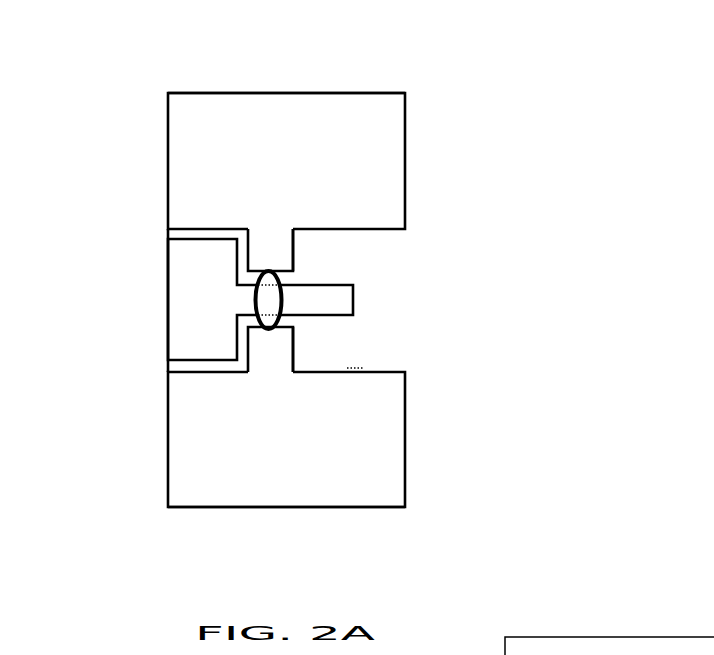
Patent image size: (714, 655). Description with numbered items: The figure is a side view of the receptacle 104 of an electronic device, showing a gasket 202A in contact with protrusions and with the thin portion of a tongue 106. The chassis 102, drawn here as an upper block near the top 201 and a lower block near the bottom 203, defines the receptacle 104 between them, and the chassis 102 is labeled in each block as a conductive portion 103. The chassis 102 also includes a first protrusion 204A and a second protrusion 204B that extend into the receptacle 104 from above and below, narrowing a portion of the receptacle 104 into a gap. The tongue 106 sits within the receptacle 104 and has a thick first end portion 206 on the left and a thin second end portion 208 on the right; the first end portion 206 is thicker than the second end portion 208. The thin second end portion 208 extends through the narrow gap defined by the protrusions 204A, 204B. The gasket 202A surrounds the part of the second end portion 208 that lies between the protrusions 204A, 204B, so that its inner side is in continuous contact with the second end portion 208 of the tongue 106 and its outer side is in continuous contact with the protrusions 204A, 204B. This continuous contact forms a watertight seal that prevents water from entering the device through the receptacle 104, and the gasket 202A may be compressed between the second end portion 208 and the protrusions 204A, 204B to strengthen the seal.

The chassis 102 is at (365, 495).
The conductive portion 103 is at (228, 217).
The receptacle 104 is at (590, 257).
The tongue 106 is at (158, 333).
The top 201 is at (315, 93).
The bottom 203 is at (375, 507).
The gasket 202A is at (283, 283).
The protrusion 204A is at (293, 245).
The protrusion 204B is at (293, 352).
The first end portion 206 is at (168, 297).
The second end portion 208 is at (353, 300).